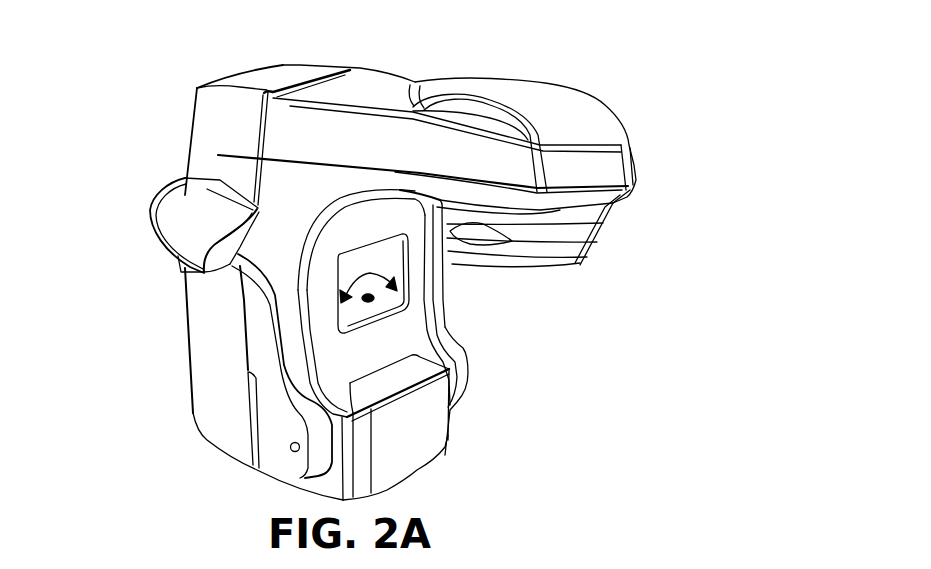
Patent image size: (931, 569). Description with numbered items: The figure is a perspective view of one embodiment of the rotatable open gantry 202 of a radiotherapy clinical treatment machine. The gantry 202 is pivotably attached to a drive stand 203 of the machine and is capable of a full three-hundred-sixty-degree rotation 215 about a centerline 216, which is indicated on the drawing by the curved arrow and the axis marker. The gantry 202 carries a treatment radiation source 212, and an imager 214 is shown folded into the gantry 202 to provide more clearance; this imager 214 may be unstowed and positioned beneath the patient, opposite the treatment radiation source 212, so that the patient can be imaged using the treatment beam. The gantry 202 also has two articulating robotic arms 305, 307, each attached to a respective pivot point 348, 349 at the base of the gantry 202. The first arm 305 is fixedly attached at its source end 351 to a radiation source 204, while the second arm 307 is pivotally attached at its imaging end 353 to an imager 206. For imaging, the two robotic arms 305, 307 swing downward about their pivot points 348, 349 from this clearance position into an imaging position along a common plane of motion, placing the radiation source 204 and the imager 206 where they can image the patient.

The rotatable open gantry 202 is at (378, 257).
The drive stand 203 is at (192, 118).
The radiation source 204 is at (150, 243).
The imager 206 is at (452, 252).
The treatment radiation source 212 is at (606, 228).
The imager 214 is at (413, 462).
The 360-degree rotation 215 is at (373, 283).
The centerline 216 is at (372, 297).
The articulating robotic arm 305 is at (247, 368).
The articulating robotic arm 307 is at (445, 303).
The pivot point 348 is at (289, 447).
The pivot point 349 is at (468, 362).
The source end 351 is at (243, 291).
The imaging end 353 is at (445, 262).